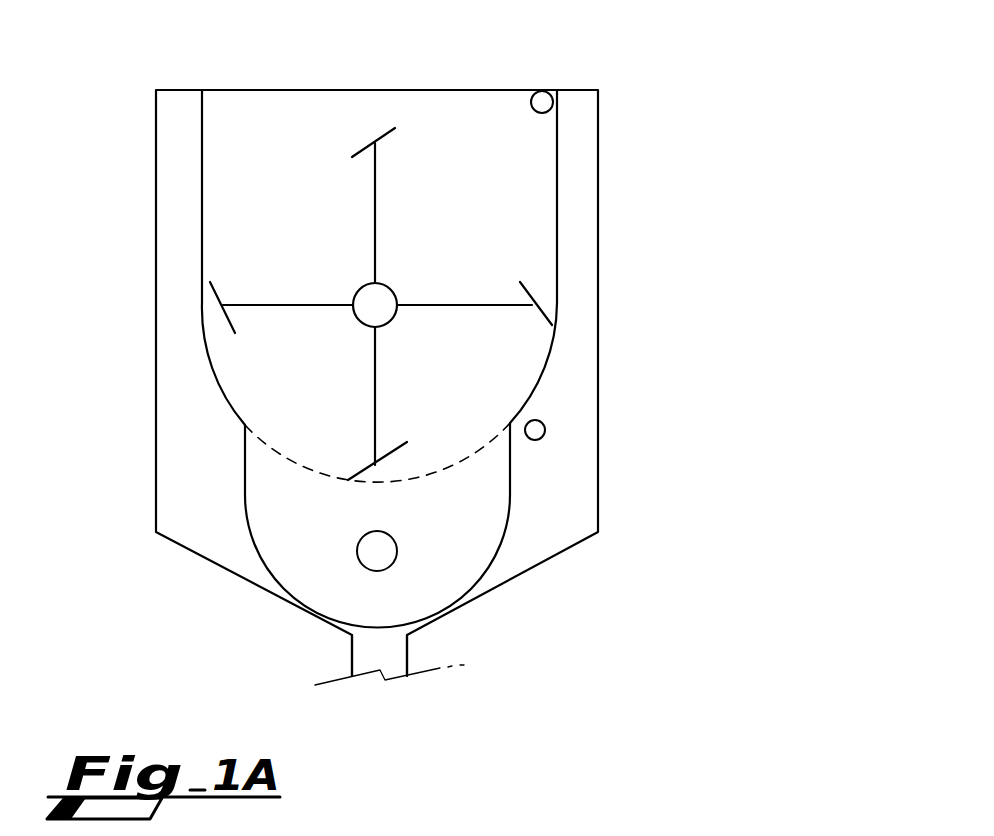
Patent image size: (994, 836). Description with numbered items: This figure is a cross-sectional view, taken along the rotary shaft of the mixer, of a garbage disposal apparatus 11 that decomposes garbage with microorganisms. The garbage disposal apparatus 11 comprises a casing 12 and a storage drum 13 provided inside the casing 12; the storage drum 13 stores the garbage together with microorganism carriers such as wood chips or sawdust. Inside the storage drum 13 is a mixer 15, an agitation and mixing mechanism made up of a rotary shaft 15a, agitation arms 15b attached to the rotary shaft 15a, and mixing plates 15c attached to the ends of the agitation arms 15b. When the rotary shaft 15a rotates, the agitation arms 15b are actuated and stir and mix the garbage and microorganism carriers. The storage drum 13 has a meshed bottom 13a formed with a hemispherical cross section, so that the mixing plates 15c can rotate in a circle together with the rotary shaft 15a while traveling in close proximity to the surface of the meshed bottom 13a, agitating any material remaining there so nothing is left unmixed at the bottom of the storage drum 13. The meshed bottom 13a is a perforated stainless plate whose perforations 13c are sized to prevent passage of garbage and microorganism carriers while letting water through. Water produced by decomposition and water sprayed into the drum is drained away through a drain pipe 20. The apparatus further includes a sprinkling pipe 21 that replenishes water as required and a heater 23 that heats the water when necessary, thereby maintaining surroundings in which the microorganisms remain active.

The garbage disposal apparatus 11 is at (600, 255).
The casing 12 is at (600, 153).
The storage drum 13 is at (557, 176).
The meshed bottom 13a is at (545, 388).
The perforations 13c is at (622, 835).
The mixer 15 is at (448, 132).
The rotary shaft 15a is at (358, 290).
The agitation arms 15b is at (376, 380).
The mixing plates 15c is at (353, 476).
The drain pipe 20 is at (352, 660).
The sprinkling pipe 21 is at (547, 97).
The heater 23 is at (547, 440).